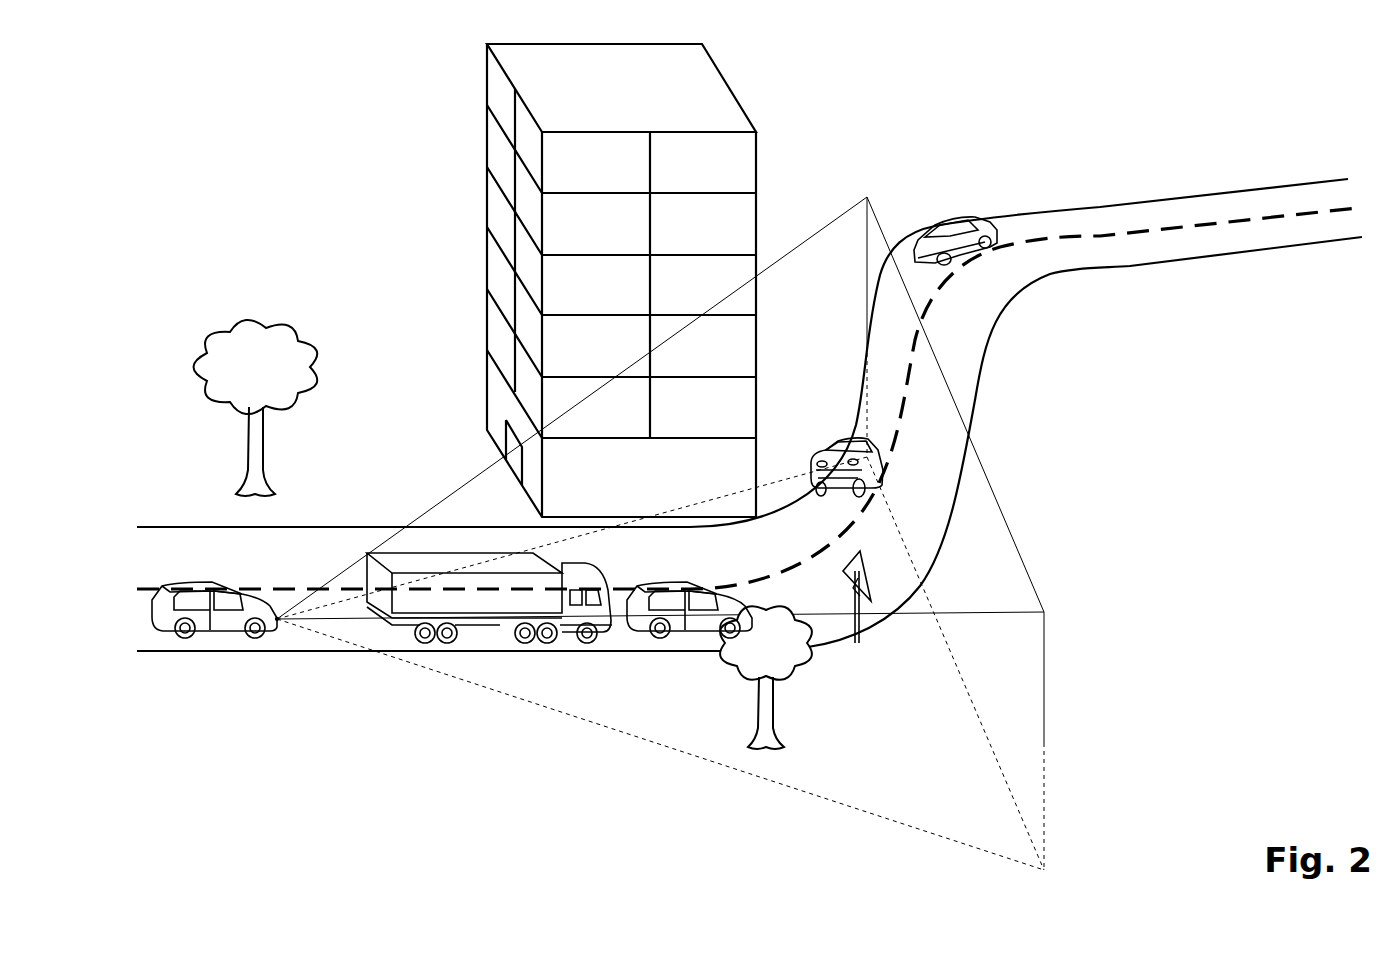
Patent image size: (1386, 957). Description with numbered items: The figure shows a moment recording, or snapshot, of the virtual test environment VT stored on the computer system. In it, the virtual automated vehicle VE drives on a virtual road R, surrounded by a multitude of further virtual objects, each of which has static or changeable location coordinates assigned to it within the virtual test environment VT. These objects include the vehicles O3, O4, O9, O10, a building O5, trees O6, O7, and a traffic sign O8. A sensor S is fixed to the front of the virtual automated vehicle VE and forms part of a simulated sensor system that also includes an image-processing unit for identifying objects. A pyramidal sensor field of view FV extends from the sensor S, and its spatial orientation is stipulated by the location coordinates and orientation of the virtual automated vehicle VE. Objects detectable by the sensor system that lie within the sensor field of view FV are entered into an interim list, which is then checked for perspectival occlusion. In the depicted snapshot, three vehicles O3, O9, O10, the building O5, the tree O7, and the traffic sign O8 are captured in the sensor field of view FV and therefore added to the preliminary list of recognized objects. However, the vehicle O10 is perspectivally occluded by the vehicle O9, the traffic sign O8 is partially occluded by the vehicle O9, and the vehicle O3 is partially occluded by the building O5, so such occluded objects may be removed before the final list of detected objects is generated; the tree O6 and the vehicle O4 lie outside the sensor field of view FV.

The virtual test environment VT is at (312, 145).
The virtual road R is at (1140, 203).
The sensor field of view FV is at (845, 775).
The building O5 is at (494, 150).
The tree O6 is at (262, 332).
The tree O7 is at (770, 705).
The virtual automated vehicle VE is at (230, 623).
The sensor S is at (277, 621).
The vehicle O9 is at (598, 611).
The vehicle O10 is at (700, 623).
The traffic sign O8 is at (865, 628).
The vehicle O3 is at (848, 437).
The vehicle O4 is at (957, 218).